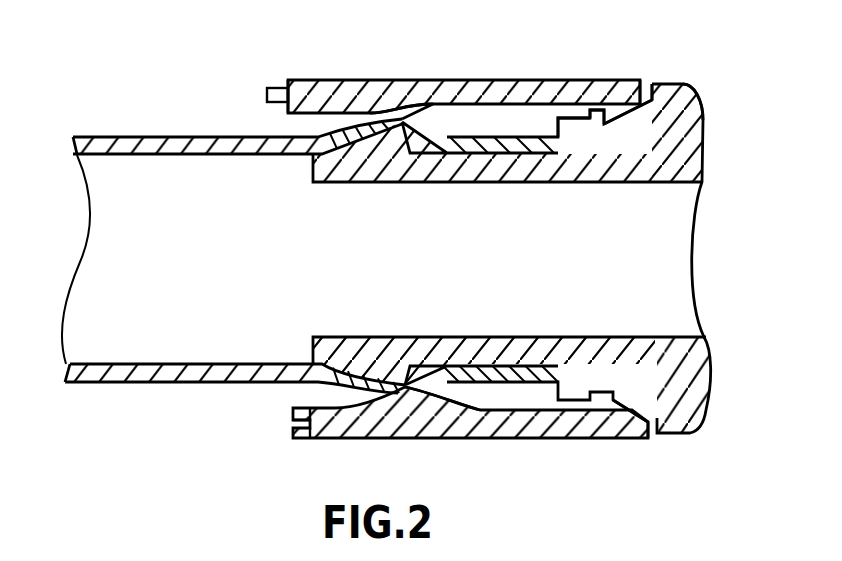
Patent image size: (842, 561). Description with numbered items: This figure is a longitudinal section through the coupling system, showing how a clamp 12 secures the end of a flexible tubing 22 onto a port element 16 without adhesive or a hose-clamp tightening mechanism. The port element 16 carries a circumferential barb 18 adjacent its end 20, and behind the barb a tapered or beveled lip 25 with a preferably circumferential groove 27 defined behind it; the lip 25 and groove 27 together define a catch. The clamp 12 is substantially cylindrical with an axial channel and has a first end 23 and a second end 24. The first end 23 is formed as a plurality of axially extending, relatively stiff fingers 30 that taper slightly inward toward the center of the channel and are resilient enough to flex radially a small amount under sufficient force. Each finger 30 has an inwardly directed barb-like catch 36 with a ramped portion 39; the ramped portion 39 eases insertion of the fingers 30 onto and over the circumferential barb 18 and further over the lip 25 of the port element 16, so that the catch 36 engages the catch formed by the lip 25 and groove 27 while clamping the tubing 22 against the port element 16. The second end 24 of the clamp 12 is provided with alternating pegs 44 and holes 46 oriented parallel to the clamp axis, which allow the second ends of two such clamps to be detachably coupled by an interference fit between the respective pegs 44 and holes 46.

The clamp 12 is at (388, 80).
The port element 16 is at (700, 136).
The circumferential barb 18 is at (398, 372).
The end 20 is at (310, 165).
The tubing 22 is at (96, 136).
The first end 23 is at (645, 86).
The second end 24 is at (287, 81).
The tapered or beveled lip 25 is at (582, 108).
The circumferential groove 27 is at (574, 118).
The fingers 30 is at (481, 103).
The barb-like catch 36 is at (606, 119).
The ramped portion 39 is at (699, 102).
The pegs 44 is at (268, 93).
The holes 46 is at (292, 422).